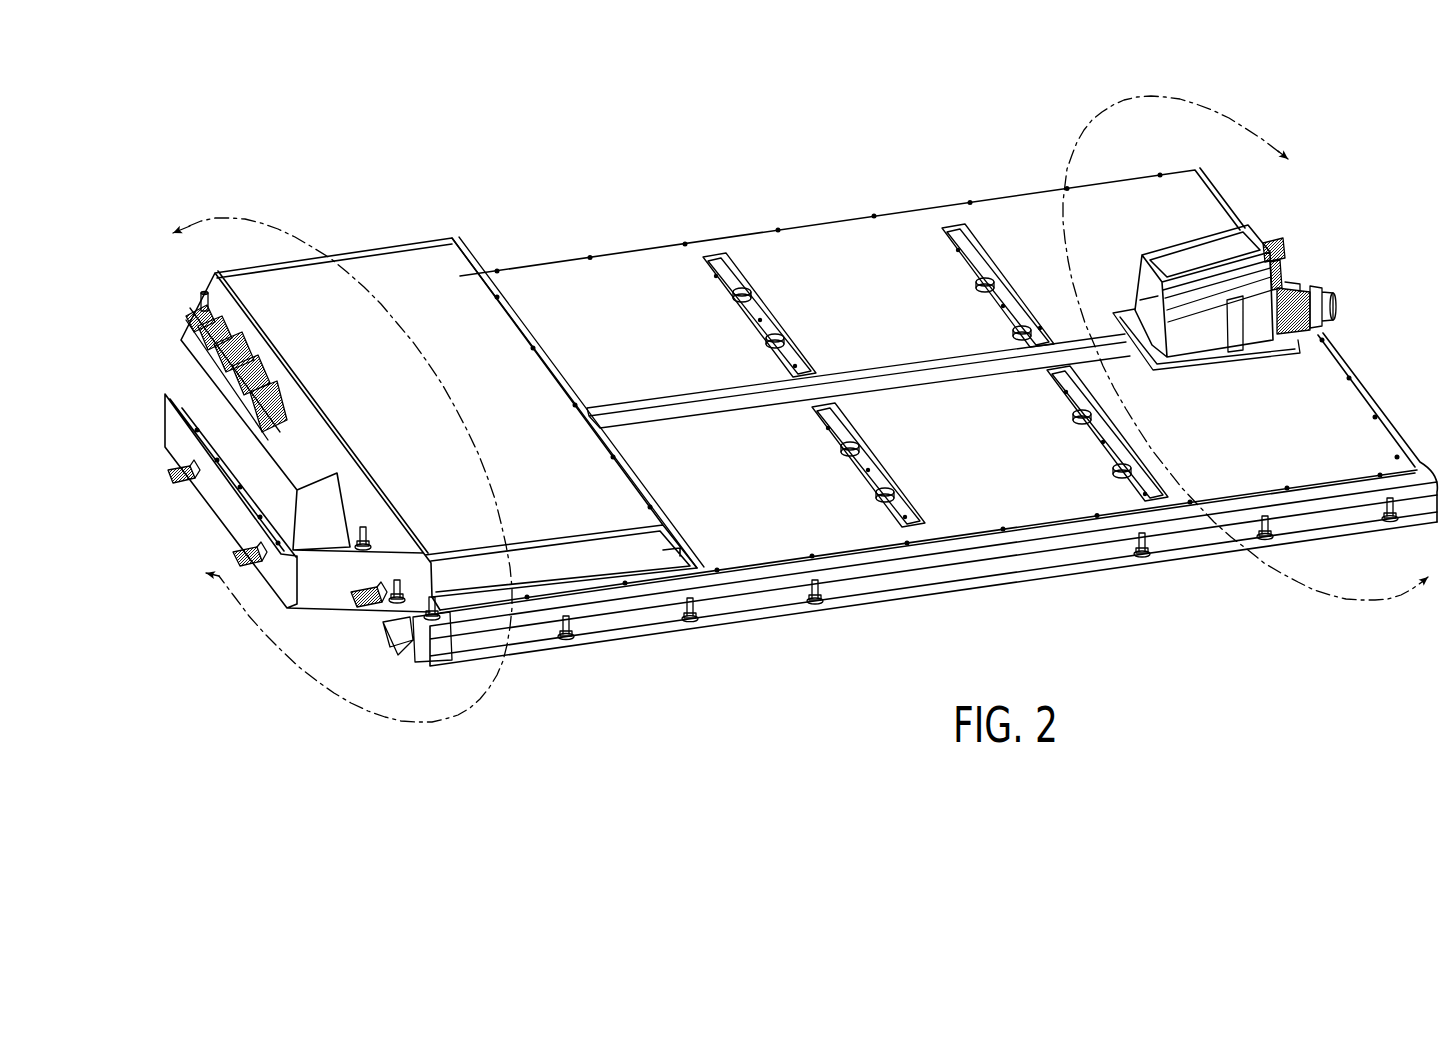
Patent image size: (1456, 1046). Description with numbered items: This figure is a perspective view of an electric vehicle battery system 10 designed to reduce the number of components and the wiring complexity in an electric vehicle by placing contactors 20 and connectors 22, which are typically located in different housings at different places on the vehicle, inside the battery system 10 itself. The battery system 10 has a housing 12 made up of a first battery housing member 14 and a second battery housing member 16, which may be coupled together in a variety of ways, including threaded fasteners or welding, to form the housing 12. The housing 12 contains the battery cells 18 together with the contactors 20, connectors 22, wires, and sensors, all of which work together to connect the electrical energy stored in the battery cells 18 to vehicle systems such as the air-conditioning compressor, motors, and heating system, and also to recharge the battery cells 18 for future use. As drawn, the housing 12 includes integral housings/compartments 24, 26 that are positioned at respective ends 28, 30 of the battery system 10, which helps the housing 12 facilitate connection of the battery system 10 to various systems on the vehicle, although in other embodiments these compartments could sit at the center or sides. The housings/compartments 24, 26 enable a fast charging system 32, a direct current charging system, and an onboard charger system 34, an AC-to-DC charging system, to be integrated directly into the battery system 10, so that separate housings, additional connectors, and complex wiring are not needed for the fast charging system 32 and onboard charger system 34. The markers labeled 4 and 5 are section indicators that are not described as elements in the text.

The electric vehicle battery system 10 is at (927, 95).
The housing 12 is at (1316, 226).
The first battery housing member 14 is at (855, 245).
The second battery housing member 16 is at (533, 635).
The battery cells 18 is at (1322, 452).
The contactors 20 is at (770, 361).
The connectors 22 is at (172, 313).
The housing/compartment 24 is at (207, 524).
The housing/compartment 26 is at (1354, 305).
The end 28 is at (272, 568).
The end 30 is at (1218, 195).
The fast charging system 32 is at (260, 540).
The onboard charger system 34 is at (158, 428).
The section indicator for FIG. 4 is at (333, 457).
The section indicator for FIG. 5 is at (1251, 353).